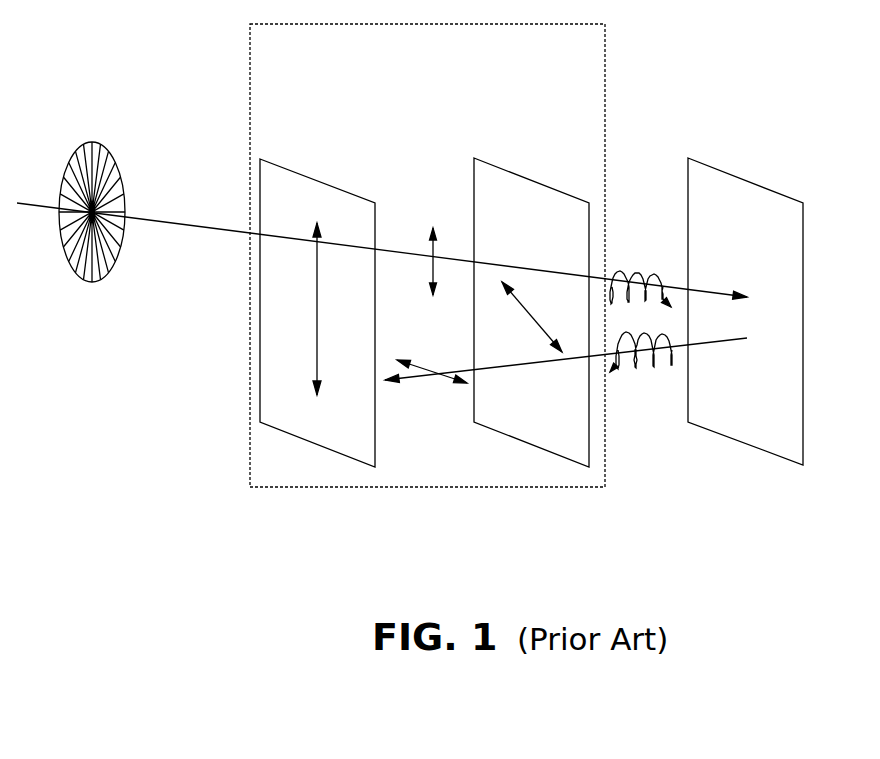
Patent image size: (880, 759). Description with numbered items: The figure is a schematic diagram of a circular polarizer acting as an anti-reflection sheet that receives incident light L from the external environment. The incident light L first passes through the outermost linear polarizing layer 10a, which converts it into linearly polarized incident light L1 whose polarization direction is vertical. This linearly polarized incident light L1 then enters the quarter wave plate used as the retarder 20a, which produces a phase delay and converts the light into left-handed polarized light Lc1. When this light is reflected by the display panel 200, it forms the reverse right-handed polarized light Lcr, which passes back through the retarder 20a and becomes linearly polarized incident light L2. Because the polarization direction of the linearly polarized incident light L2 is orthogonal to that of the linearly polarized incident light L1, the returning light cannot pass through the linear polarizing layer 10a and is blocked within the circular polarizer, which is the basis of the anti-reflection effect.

The incident light L is at (92, 197).
The linear polarizing layer 10a is at (316, 181).
The retarder 20a is at (531, 180).
The display panel 200 is at (745, 178).
The linearly polarized incident light L1 is at (417, 261).
The linearly polarized incident light L2 is at (432, 385).
The left-handed polarized light Lc1 is at (640, 272).
The right-handed polarized light Lcr is at (641, 370).